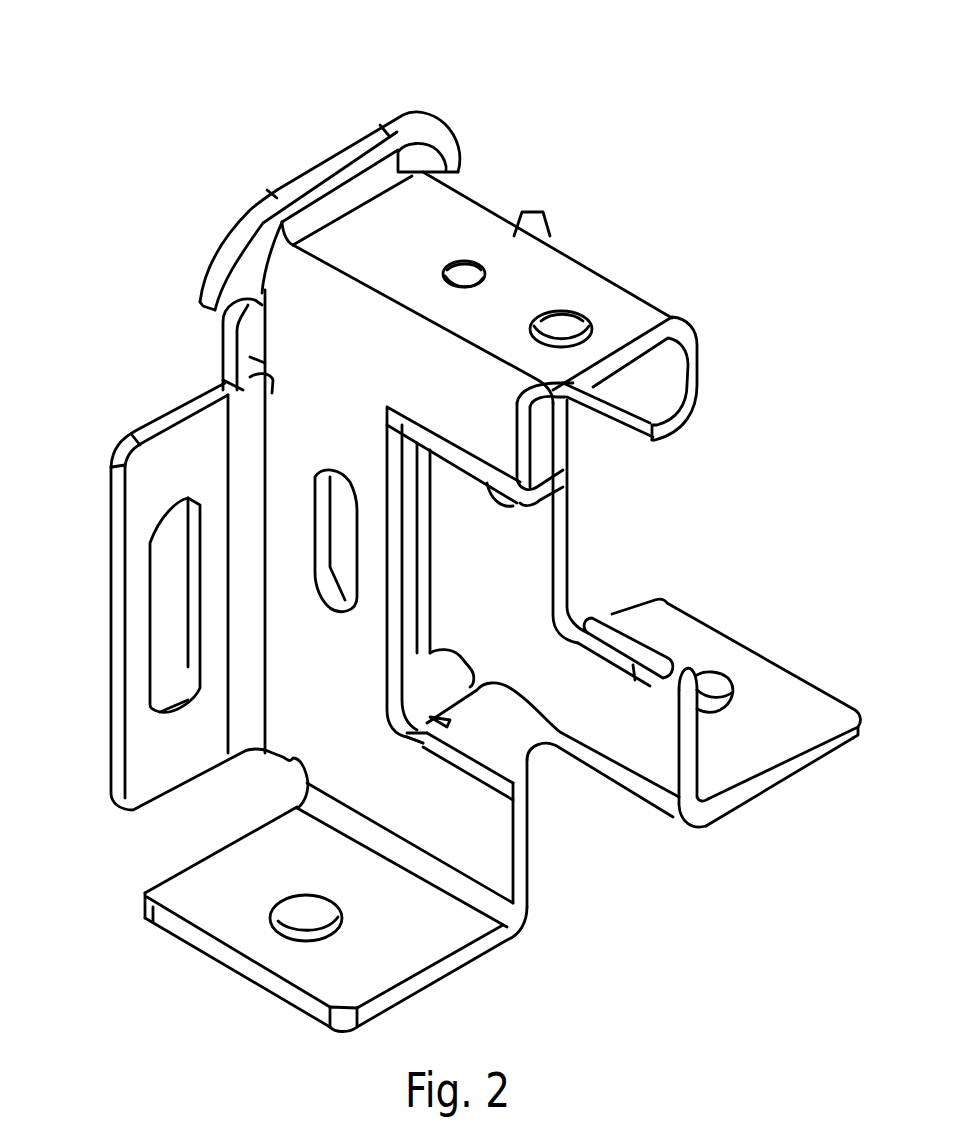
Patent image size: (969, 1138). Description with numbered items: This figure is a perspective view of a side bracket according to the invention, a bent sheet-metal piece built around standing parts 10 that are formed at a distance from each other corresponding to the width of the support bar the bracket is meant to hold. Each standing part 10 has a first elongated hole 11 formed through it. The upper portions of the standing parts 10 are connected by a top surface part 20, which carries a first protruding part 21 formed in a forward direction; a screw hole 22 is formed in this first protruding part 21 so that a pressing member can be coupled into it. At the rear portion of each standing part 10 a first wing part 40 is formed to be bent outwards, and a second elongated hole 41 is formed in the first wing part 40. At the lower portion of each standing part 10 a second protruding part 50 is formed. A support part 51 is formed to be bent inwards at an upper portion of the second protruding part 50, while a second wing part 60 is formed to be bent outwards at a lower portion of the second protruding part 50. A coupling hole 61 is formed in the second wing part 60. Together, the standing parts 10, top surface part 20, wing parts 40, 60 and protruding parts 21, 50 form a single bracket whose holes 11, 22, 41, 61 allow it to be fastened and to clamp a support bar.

The standing part 10 is at (451, 553).
The first elongated hole 11 is at (327, 605).
The top surface part 20 is at (448, 309).
The first protruding part 21 is at (427, 417).
The screw hole 22 is at (577, 318).
The first wing part 40 is at (174, 596).
The second elongated hole 41 is at (170, 600).
The second protruding part 50 is at (675, 743).
The support part 51 is at (617, 643).
The second wing part 60 is at (282, 896).
The coupling hole 61 is at (303, 928).